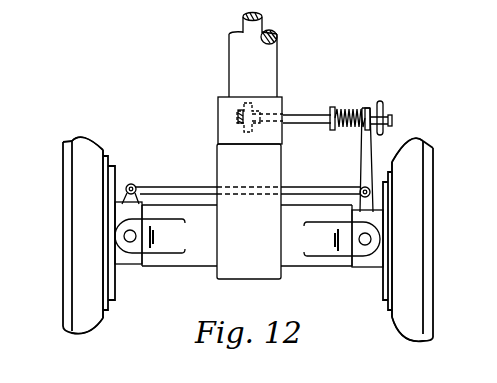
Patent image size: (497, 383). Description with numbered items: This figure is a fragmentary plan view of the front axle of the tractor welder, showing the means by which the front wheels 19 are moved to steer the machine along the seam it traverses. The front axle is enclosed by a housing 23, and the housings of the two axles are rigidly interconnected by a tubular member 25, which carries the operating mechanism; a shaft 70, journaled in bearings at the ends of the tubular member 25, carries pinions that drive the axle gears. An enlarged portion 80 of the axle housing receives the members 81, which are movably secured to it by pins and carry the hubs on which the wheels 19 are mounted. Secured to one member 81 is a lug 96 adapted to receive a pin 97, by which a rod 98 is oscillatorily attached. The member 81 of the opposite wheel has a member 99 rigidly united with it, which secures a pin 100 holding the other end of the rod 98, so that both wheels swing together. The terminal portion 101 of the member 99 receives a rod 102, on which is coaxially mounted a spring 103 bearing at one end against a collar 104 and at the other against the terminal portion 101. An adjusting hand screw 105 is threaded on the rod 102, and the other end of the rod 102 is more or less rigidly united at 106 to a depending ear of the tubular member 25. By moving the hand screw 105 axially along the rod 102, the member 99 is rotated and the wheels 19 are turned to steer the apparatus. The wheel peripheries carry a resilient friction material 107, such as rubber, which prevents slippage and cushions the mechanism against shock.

The wheels 19 is at (68, 140).
The housing 23 is at (300, 266).
The tubular member 25 is at (229, 66).
The shaft 70 is at (246, 24).
The enlarged portion of the axle housing 80 is at (148, 266).
The member 81 is at (117, 202).
The lug 96 is at (138, 192).
The pin 97 is at (132, 184).
The rod 98 is at (192, 187).
The member 99 is at (362, 148).
The pin 100 is at (361, 189).
The terminal portion 101 is at (367, 107).
The rod 102 is at (302, 113).
The spring 103 is at (347, 114).
The collar 104 is at (332, 106).
The adjusting hand screw 105 is at (382, 103).
The connection to depending ear 106 is at (266, 113).
The resilient friction material 107 is at (87, 141).